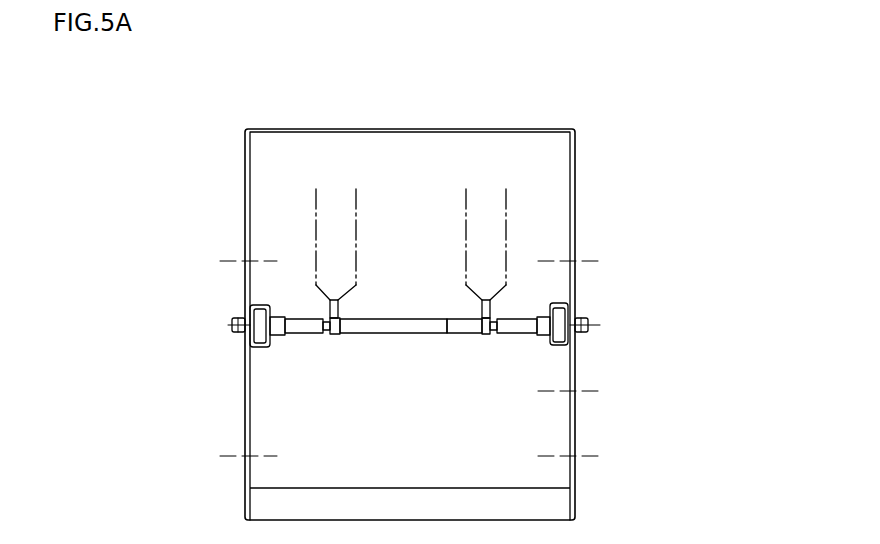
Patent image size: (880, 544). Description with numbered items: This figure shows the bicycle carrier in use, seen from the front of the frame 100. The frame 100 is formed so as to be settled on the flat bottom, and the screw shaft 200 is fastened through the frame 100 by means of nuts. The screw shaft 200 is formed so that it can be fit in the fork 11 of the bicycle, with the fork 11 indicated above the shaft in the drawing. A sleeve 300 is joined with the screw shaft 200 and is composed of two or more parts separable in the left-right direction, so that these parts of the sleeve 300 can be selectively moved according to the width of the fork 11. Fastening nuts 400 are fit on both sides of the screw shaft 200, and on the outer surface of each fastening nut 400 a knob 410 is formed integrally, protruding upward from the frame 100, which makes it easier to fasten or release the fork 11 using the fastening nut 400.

The frame 100 is at (243, 402).
The fork 11 is at (331, 311).
The sleeve 300 is at (467, 333).
The screw shaft 200 is at (498, 333).
The fastening nut 400 is at (302, 330).
The knob 410 is at (573, 348).